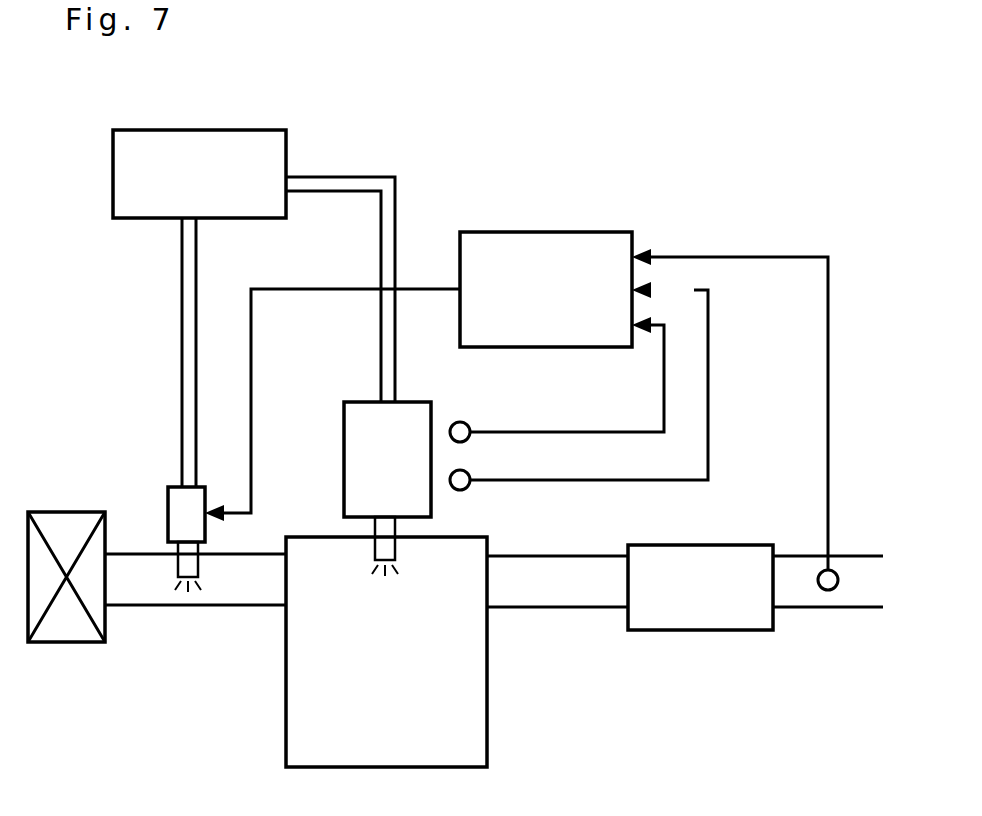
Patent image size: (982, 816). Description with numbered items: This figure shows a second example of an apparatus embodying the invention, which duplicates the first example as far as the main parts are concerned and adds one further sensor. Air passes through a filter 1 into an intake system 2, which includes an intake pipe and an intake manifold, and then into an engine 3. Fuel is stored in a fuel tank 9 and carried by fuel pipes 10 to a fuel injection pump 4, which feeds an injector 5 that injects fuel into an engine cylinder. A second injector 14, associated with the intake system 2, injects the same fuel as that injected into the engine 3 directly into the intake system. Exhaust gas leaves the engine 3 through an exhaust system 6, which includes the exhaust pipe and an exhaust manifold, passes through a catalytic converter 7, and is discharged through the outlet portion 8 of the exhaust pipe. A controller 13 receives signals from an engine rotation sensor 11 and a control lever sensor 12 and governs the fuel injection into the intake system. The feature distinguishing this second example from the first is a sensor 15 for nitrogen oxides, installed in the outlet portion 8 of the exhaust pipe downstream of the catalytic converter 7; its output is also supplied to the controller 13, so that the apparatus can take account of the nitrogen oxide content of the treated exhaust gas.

The filter 1 is at (47, 642).
The intake system 2 is at (170, 607).
The engine 3 is at (321, 707).
The fuel injection pump 4 is at (344, 458).
The injector 5 is at (373, 555).
The exhaust system 6 is at (559, 634).
The catalytic converter 7 is at (704, 632).
The outlet portion of exhaust pipe 8 is at (796, 609).
The fuel tank 9 is at (113, 175).
The fuel pipes 10 is at (182, 277).
The engine rotation sensor 11 is at (471, 428).
The control lever sensor 12 is at (470, 480).
The controller 13 is at (545, 232).
The injector 14 is at (168, 513).
The sensor for NOx 15 is at (838, 583).